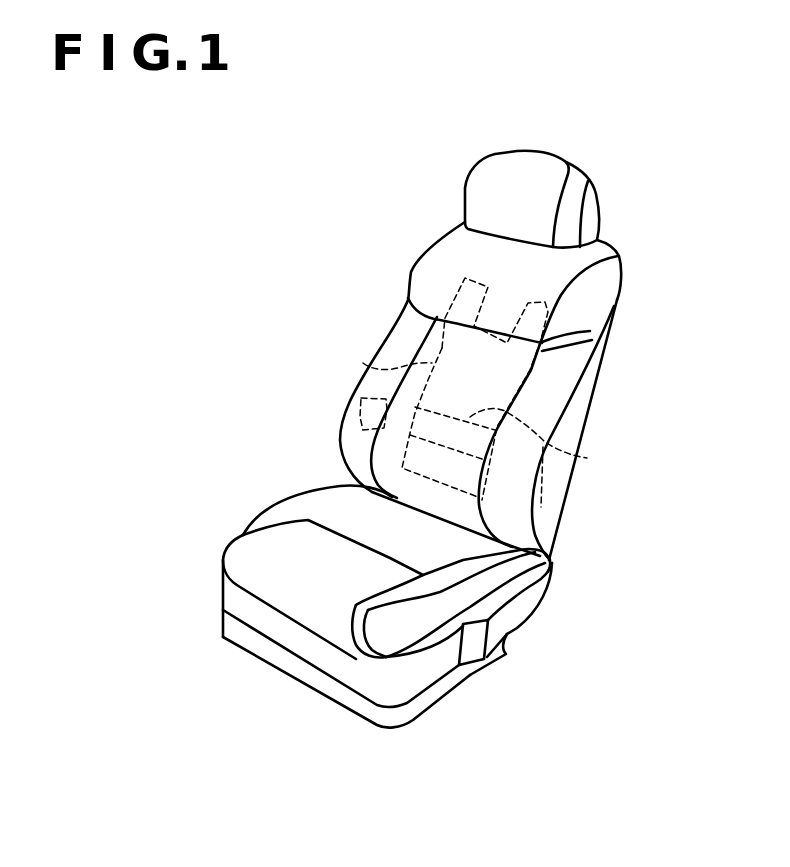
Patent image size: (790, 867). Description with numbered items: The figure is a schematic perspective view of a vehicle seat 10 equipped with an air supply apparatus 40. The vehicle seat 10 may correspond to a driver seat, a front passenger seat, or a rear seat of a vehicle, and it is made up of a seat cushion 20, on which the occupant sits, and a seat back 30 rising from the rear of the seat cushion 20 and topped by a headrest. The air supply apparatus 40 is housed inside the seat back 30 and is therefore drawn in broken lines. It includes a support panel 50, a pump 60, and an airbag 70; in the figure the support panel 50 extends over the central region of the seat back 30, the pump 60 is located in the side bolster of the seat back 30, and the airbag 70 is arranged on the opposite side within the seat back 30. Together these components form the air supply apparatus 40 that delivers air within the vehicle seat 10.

The vehicle seat 10 is at (268, 262).
The seat cushion 20 is at (233, 545).
The seat back 30 is at (619, 310).
The air supply apparatus 40 is at (409, 338).
The support panel 50 is at (363, 363).
The pump 60 is at (362, 406).
The airbag 70 is at (549, 458).